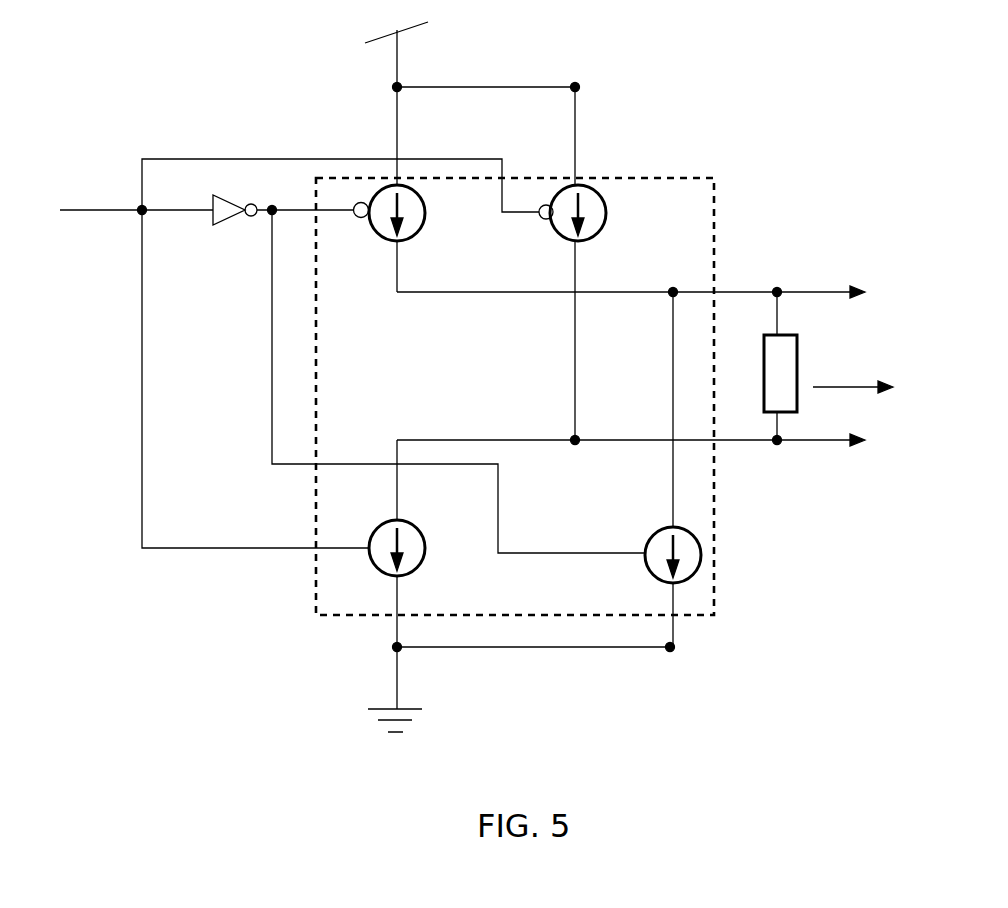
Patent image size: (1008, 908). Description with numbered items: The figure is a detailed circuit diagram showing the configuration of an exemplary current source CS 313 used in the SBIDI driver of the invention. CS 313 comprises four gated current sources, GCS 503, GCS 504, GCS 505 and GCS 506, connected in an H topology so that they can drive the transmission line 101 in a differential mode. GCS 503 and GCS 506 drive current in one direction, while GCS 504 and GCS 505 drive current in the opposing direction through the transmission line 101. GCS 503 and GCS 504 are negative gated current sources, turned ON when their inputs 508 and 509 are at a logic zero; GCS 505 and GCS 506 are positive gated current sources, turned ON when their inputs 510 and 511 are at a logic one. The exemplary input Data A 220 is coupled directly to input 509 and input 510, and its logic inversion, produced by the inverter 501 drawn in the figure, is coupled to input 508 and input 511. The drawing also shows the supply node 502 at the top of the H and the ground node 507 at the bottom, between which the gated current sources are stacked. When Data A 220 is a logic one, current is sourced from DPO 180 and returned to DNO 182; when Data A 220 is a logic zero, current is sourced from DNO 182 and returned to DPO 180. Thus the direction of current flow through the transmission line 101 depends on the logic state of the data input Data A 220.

The current source 313 is at (657, 172).
The VDD supply node 502 is at (410, 20).
The Data A 220 is at (77, 155).
The inverter 501 is at (225, 190).
The input 508 is at (338, 217).
The input 509 is at (517, 202).
The gated current source 503 is at (428, 227).
The gated current source 504 is at (610, 215).
The gated current source 505 is at (710, 527).
The gated current source 506 is at (427, 553).
The input 510 is at (187, 547).
The input 511 is at (537, 548).
The ground node 507 is at (377, 700).
The DPO 180 is at (828, 293).
The DNO 182 is at (827, 443).
The transmission line 101 is at (852, 375).